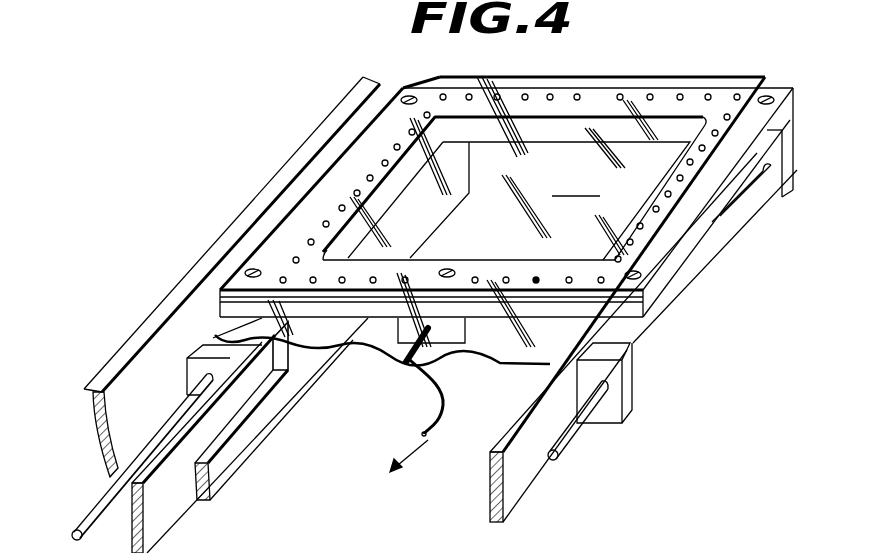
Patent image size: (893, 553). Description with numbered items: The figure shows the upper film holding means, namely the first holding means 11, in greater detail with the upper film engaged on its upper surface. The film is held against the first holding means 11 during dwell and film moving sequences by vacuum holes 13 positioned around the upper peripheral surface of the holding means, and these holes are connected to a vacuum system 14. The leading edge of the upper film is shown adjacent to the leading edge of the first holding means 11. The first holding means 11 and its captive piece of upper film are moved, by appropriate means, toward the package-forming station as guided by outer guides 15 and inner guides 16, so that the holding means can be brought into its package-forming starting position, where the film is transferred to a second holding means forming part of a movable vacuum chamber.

The first holding means 11 is at (506, 220).
The vacuum holes 13 is at (680, 94).
The vacuum system 14 is at (447, 418).
The outer guides 15 is at (80, 522).
The inner guides 16 is at (227, 403).